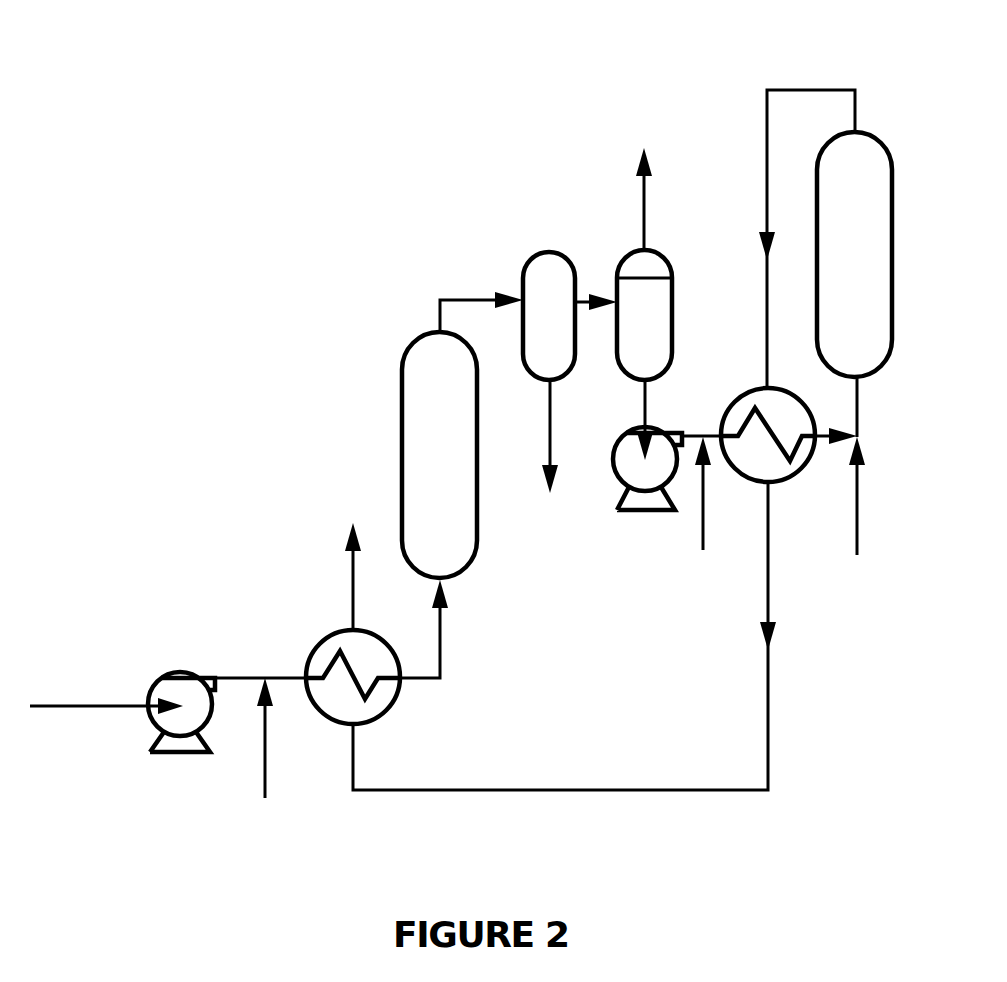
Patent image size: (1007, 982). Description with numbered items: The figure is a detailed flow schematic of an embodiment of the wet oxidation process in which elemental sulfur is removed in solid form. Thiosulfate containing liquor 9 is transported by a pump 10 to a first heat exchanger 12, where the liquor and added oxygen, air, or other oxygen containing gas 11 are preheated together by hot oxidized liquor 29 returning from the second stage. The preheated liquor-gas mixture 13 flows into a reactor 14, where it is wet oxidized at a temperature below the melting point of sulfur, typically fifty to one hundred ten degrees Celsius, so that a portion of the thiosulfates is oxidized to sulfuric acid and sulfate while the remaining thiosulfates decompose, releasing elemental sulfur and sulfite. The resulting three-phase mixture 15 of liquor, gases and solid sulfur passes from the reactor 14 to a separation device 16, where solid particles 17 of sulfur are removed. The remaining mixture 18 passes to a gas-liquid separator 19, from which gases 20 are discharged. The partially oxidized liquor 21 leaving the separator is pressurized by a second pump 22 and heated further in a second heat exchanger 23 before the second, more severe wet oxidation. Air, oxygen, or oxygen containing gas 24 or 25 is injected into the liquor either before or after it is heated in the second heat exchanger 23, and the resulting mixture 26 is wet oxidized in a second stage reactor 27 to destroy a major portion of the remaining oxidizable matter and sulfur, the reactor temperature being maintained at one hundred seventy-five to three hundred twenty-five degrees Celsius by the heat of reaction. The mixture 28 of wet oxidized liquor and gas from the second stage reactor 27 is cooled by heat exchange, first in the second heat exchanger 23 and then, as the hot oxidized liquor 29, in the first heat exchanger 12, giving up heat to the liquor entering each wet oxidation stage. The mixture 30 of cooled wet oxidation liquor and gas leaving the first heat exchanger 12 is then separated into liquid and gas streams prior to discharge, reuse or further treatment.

The thiosulfate containing liquor 9 is at (38, 706).
The pump 10 is at (167, 690).
The oxygen containing gas 11 is at (262, 760).
The first heat exchanger 12 is at (333, 645).
The preheated liquor-gas mixture 13 is at (440, 657).
The reactor 14 is at (422, 465).
The three-phase mixture 15 is at (472, 295).
The separation device 16 is at (550, 268).
The solid particles of sulfur 17 is at (548, 425).
The remaining mixture 18 is at (585, 298).
The gas-liquid separator 19 is at (653, 327).
The gases 20 is at (647, 210).
The partially oxidized liquor 21 is at (643, 403).
The pump 22 is at (647, 473).
The second heat exchanger 23 is at (797, 457).
The oxygen containing gas 24 is at (705, 493).
The oxygen containing gas 25 is at (858, 543).
The resulting mixture 26 is at (858, 410).
The second stage reactor 27 is at (842, 193).
The mixture of wet oxidized liquor and gas 28 is at (777, 88).
The hot oxidized liquor 29 is at (770, 718).
The mixture of cooled wet oxidation liquor and gas 30 is at (350, 590).